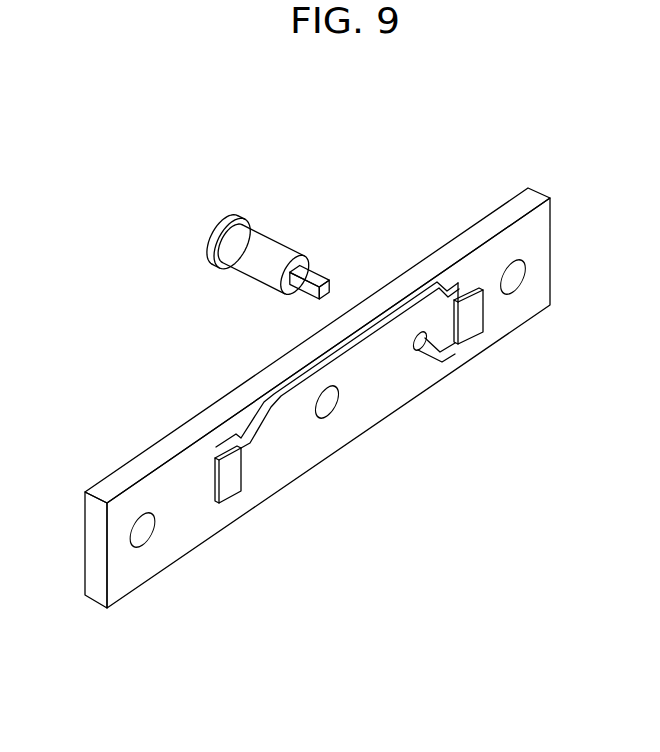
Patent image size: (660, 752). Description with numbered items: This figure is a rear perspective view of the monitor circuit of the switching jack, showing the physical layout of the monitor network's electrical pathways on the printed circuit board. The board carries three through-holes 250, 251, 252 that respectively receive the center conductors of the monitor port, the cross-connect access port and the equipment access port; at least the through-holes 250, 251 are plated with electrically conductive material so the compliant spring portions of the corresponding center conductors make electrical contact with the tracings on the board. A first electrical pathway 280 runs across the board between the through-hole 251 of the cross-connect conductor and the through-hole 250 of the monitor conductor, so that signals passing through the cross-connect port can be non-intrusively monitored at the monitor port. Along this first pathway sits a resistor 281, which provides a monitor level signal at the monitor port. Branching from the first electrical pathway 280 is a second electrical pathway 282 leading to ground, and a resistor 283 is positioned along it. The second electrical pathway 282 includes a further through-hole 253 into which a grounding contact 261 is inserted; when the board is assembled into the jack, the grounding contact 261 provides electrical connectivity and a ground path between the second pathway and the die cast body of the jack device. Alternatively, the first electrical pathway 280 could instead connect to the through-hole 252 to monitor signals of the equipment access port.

The through-hole 250 is at (511, 277).
The through-hole 251 is at (332, 404).
The through-hole 252 is at (148, 530).
The through-hole 253 is at (417, 350).
The grounding contact 261 is at (265, 245).
The first electrical pathway 280 is at (318, 377).
The resistor 281 is at (231, 487).
The second electrical pathway 282 is at (444, 357).
The resistor 283 is at (473, 320).